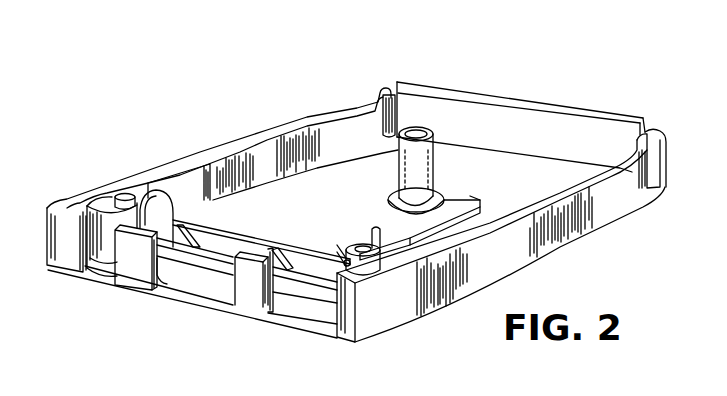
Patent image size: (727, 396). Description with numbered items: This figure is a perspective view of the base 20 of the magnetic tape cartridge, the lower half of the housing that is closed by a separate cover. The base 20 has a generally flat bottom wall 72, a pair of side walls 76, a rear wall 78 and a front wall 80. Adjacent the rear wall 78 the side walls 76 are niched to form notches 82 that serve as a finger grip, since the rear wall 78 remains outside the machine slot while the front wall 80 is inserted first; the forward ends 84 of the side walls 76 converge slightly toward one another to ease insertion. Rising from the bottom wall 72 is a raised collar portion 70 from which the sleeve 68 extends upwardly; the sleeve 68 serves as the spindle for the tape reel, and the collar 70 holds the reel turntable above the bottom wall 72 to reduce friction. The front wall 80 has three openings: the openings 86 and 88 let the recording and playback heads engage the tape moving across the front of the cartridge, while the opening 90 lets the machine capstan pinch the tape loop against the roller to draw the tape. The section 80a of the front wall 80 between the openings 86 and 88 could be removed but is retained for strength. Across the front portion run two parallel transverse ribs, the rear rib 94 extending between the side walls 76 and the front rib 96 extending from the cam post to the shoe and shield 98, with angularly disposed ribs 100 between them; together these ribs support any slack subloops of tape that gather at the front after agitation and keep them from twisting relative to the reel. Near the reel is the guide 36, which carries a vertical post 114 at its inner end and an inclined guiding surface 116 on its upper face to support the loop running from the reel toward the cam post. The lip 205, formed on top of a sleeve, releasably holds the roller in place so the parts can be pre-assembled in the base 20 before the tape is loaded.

The base 20 is at (516, 74).
The guide 36 is at (478, 203).
The sleeve 68 is at (430, 138).
The raised collar portion 70 is at (437, 206).
The bottom wall 72 is at (336, 199).
The side walls 76 is at (272, 130).
The rear wall 78 is at (558, 107).
The front wall 80 is at (143, 262).
The section of the front wall 80a is at (252, 287).
The notches 82 is at (376, 100).
The forward ends of the side walls 84 is at (60, 200).
The opening 86 is at (270, 313).
The opening 88 is at (165, 283).
The opening 90 is at (86, 270).
The rear rib 94 is at (303, 247).
The front rib 96 is at (327, 296).
The shoe and shield 98 is at (112, 196).
The angularly disposed ribs 100 is at (285, 266).
The post 114 is at (374, 226).
The inclined guiding surface 116 is at (420, 228).
The lip 205 is at (138, 196).